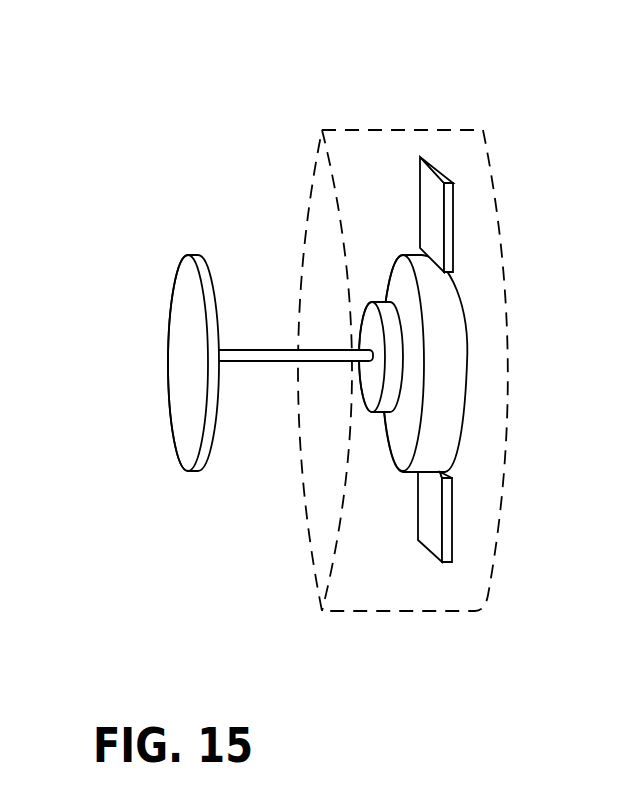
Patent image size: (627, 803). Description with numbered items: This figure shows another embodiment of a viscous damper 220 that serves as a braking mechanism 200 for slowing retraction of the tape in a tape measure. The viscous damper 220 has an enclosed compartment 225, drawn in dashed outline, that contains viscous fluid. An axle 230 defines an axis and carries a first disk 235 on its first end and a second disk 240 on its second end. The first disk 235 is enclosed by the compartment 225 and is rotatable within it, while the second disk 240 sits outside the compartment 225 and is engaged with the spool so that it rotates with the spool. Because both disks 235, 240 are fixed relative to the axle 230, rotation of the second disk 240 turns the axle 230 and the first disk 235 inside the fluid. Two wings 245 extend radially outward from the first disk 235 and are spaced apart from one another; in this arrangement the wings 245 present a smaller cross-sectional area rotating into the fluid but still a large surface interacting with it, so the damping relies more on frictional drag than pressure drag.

The braking mechanism 200 is at (347, 319).
The viscous damper 220 is at (347, 319).
The enclosed compartment 225 is at (378, 133).
The axle 230 is at (271, 362).
The first disk 235 is at (442, 350).
The second disk 240 is at (187, 405).
The wings 245 is at (430, 215).